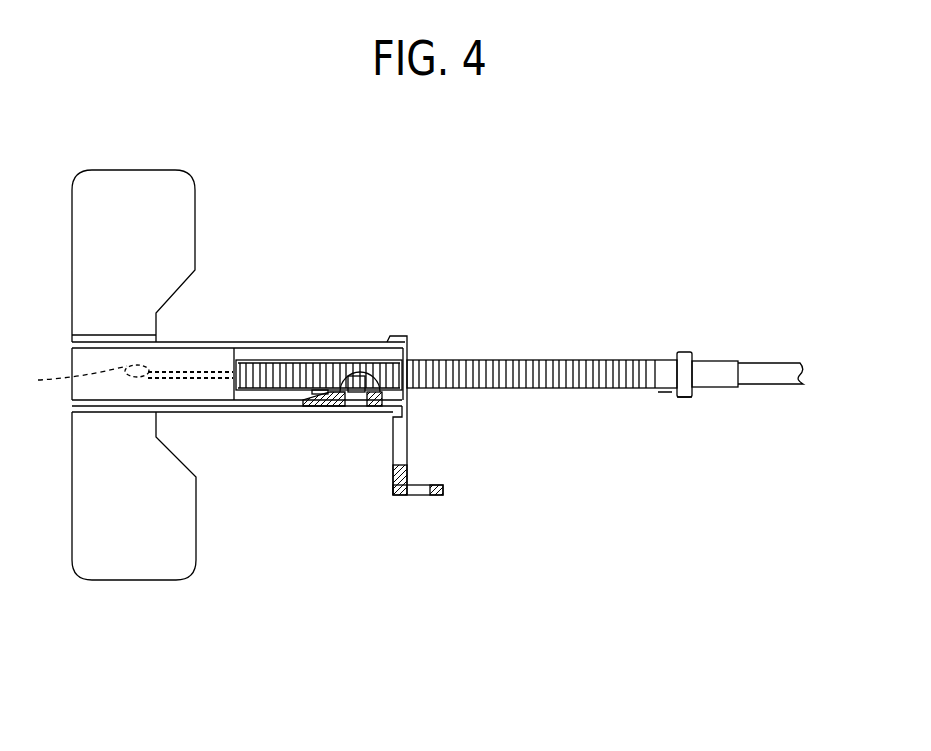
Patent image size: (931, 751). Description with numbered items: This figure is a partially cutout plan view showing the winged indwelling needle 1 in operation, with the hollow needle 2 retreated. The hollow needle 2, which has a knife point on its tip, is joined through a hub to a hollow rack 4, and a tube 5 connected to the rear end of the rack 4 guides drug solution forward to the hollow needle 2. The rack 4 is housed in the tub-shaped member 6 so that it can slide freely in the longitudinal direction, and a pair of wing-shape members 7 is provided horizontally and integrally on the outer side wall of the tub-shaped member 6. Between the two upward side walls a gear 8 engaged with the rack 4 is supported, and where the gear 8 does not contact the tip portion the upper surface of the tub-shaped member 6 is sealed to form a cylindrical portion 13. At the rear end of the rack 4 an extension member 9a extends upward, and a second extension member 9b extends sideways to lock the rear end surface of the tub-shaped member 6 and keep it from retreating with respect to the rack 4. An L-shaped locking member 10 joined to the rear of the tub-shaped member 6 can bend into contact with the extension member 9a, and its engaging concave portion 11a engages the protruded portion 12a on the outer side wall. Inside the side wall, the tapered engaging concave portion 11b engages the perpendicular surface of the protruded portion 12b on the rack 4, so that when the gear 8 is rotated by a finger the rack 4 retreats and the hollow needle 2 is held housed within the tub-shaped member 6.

The winged indwelling needle 1 is at (488, 213).
The hollow needle 2 is at (124, 378).
The rack 4 is at (565, 388).
The tube 5 is at (767, 384).
The tub-shaped member 6 is at (320, 342).
The wing-shape member 7 is at (195, 207).
The gear 8 is at (263, 378).
The extension member 9a is at (672, 370).
The extension member 9b is at (688, 397).
The locking member 10 is at (407, 437).
The engaging concave portion 11a is at (415, 495).
The engaging concave portion 11b is at (358, 402).
The protruded portion 12a is at (392, 340).
The protruded portion 12b is at (345, 409).
The cylindrical portion 13 is at (203, 390).